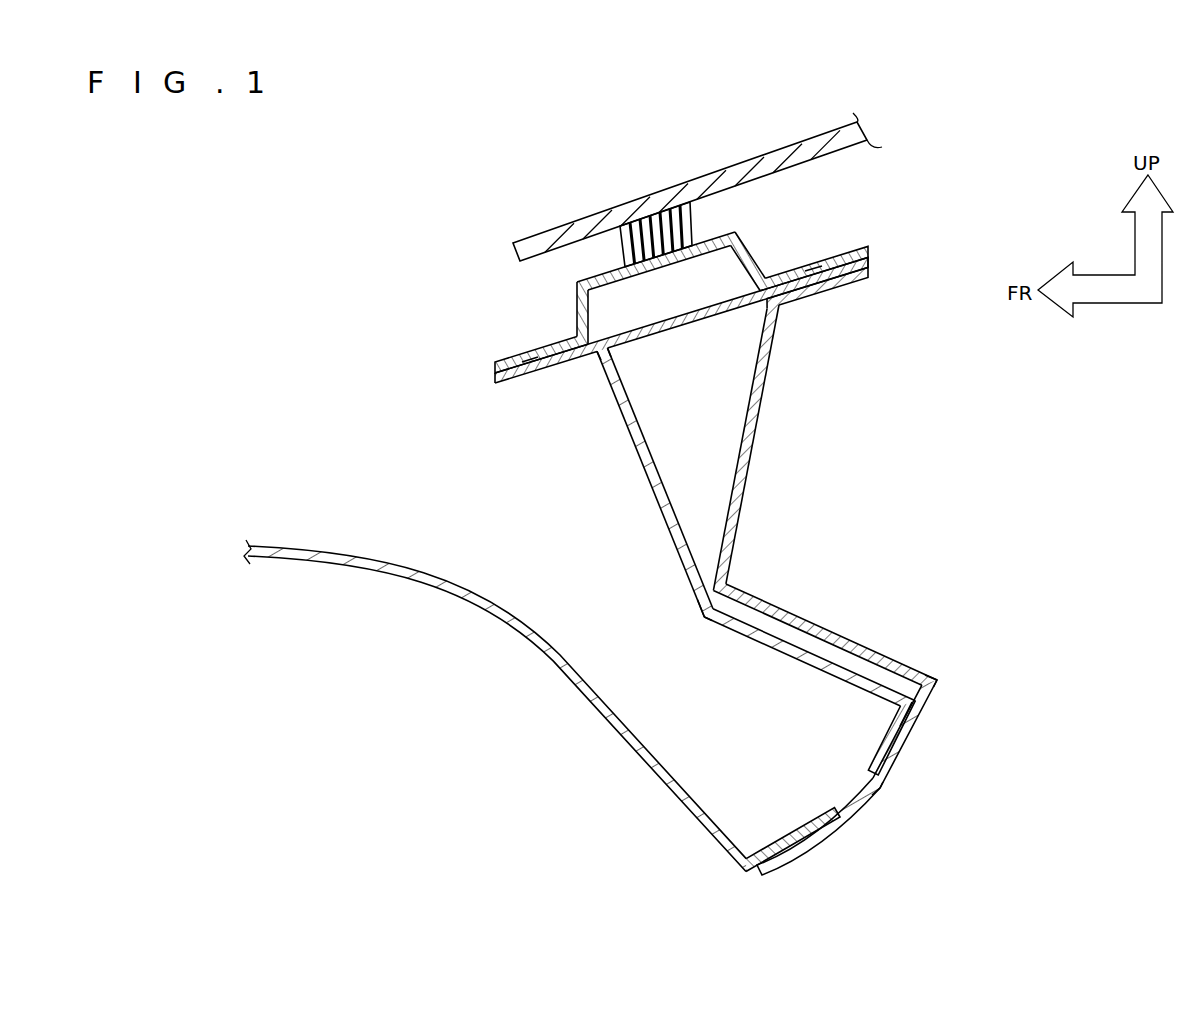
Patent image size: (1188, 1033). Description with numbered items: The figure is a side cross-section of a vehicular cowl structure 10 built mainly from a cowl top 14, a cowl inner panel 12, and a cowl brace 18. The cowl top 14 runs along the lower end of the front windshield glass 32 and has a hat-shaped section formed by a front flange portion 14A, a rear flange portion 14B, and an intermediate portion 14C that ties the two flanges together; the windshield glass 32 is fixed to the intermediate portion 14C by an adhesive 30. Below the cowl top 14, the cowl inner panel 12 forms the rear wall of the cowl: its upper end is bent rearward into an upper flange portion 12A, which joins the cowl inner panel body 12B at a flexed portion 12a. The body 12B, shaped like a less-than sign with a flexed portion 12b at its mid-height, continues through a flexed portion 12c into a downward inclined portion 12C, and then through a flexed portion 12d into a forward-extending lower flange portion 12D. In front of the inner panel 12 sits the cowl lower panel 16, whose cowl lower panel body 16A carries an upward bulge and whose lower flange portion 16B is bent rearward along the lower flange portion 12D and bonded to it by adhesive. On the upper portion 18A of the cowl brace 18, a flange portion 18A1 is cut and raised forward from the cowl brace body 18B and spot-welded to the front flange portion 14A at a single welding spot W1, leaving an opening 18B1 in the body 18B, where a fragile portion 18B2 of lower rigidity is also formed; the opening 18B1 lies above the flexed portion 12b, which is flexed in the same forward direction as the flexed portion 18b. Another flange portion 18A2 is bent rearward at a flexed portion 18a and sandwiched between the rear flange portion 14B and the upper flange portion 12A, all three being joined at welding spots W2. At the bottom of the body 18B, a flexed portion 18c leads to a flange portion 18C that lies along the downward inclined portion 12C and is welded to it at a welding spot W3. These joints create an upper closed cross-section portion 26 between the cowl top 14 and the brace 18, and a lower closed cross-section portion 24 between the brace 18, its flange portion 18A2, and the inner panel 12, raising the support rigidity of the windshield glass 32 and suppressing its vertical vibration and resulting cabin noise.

The vehicular cowl structure 10 is at (736, 544).
The cowl inner panel 12 is at (876, 589).
The upper flange portion 12A is at (871, 282).
The flexed portion 12a is at (784, 306).
The cowl inner panel body 12B is at (782, 447).
The flexed portion 12b is at (730, 580).
The flexed portion 12c is at (936, 684).
The downward inclined portion 12C is at (900, 777).
The flexed portion 12d is at (888, 792).
The lower flange portion 12D is at (812, 838).
The cowl top 14 is at (677, 276).
The front flange portion 14A is at (520, 356).
The rear flange portion 14B is at (857, 242).
The intermediate portion 14C is at (660, 270).
The cowl lower panel 16 is at (542, 706).
The cowl lower panel body 16A is at (578, 683).
The flange portion 16B is at (791, 823).
The cowl brace 18 is at (723, 509).
The upper portion 18A is at (723, 364).
The flange portion 18A1 is at (515, 386).
The flange portion 18A2 is at (873, 270).
The flexed portion 18a is at (610, 358).
The cowl brace body 18B is at (630, 482).
The opening 18B1 is at (605, 380).
The fragile portion 18B2 is at (632, 408).
The flexed portion 18b is at (706, 620).
The flexed portion 18c is at (900, 700).
The flange portion 18C is at (882, 748).
The lower closed cross-section portion 24 is at (700, 481).
The upper closed cross-section portion 26 is at (667, 296).
The adhesive 30 is at (640, 214).
The front windshield glass 32 is at (710, 168).
The welding spot W1 is at (530, 344).
The welding spots W2 is at (813, 258).
The welding spot W3 is at (912, 738).